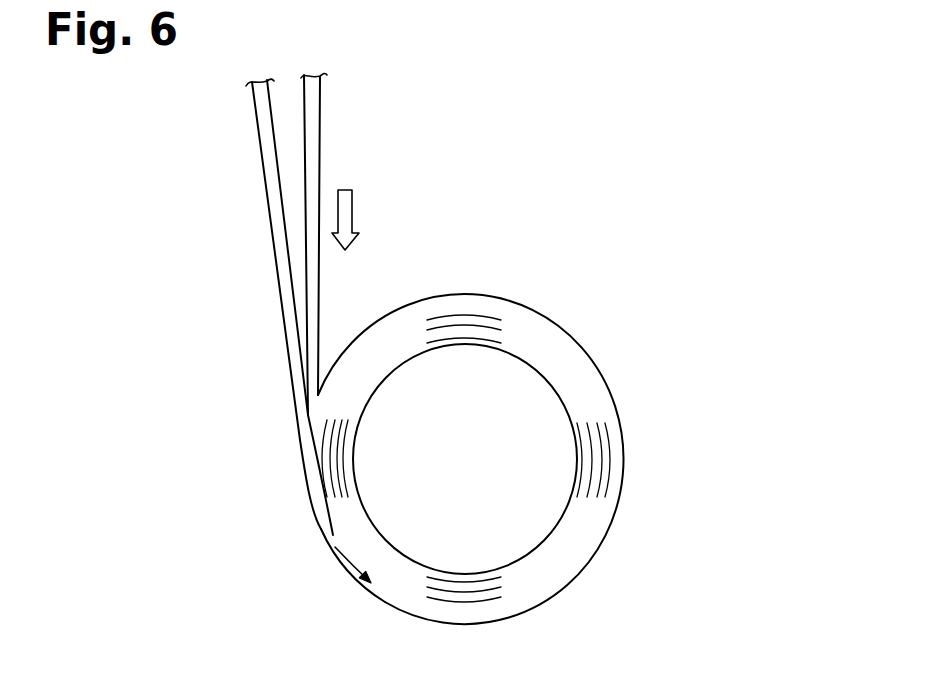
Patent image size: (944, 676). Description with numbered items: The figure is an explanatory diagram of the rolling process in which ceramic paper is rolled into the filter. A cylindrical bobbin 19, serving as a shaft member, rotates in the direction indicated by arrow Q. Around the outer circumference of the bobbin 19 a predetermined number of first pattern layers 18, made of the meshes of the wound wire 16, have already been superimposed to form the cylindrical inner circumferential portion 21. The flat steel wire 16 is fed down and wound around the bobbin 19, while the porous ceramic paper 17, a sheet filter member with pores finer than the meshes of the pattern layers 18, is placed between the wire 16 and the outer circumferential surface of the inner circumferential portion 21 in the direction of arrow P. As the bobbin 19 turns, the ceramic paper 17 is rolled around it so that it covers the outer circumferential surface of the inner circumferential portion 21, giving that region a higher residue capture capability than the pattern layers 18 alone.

The wire 16 is at (265, 183).
The ceramic paper 17 is at (317, 148).
The pattern layers 18 is at (622, 452).
The bobbin 19 is at (518, 540).
The inner circumferential portion 21 is at (390, 593).
The arrow P is at (353, 208).
The arrow Q is at (328, 528).